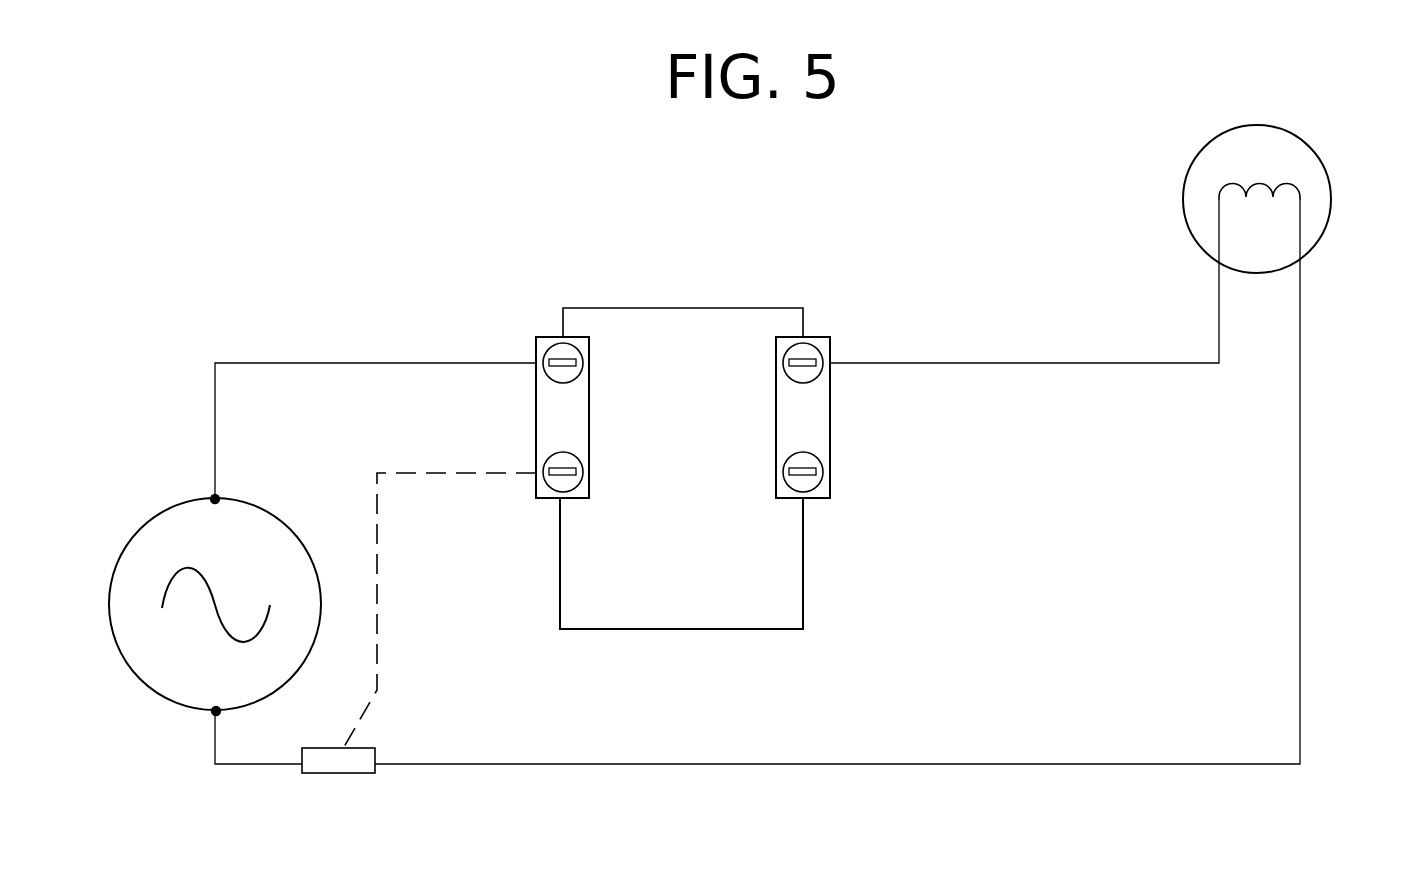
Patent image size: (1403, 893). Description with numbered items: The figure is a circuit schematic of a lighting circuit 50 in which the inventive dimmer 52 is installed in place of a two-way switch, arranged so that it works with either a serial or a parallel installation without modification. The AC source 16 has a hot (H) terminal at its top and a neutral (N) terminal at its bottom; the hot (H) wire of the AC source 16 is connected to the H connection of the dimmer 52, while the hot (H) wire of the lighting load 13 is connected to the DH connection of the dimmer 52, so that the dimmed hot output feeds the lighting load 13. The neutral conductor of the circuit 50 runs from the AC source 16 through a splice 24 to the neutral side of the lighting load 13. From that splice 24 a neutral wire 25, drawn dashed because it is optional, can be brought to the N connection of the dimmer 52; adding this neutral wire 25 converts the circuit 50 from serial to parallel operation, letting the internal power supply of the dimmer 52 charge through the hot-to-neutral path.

The lighting control system 50 is at (298, 216).
The AC source 16 is at (262, 510).
The inventive dimmer 52 is at (683, 629).
The lighting load 13 is at (1328, 170).
The splice 24 is at (372, 773).
The neutral wire 25 is at (377, 676).